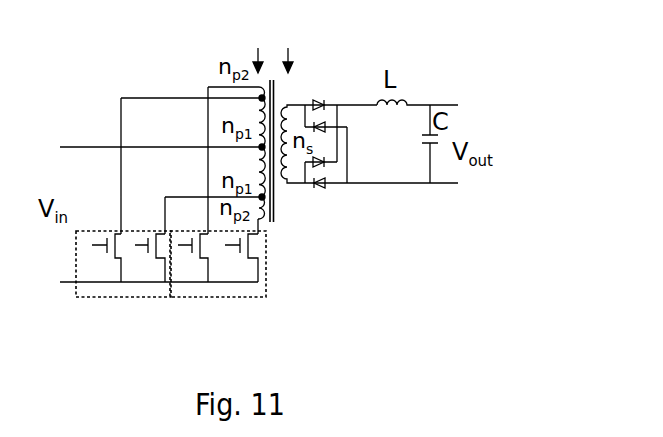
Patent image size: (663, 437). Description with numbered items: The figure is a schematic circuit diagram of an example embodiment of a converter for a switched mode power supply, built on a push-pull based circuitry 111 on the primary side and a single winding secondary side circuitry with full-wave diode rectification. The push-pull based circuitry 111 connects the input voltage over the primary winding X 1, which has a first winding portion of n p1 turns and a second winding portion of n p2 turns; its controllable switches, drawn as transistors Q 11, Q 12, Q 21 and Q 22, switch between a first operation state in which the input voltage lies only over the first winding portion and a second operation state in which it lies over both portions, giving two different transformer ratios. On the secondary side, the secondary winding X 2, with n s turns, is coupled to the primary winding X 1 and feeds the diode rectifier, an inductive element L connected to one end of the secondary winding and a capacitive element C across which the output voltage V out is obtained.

The push-pull based circuitry 111 is at (169, 301).
The switching transistor Q11 11 is at (101, 259).
The switching transistor Q12 12 is at (144, 259).
The switching transistor Q21 21 is at (189, 259).
The switching transistor Q22 22 is at (237, 259).
The transformer terminal X1 1 is at (259, 45).
The transformer terminal X2 2 is at (290, 45).